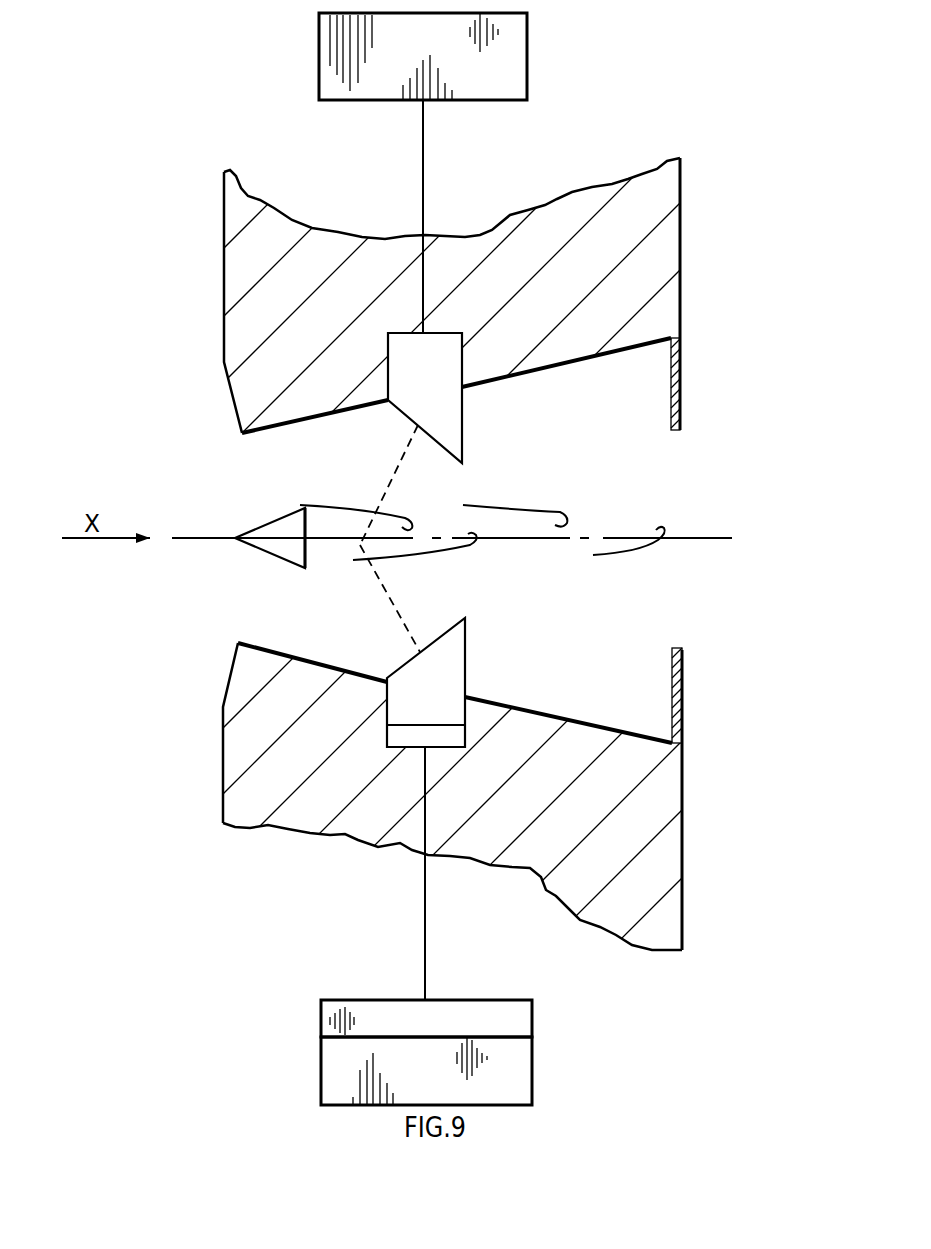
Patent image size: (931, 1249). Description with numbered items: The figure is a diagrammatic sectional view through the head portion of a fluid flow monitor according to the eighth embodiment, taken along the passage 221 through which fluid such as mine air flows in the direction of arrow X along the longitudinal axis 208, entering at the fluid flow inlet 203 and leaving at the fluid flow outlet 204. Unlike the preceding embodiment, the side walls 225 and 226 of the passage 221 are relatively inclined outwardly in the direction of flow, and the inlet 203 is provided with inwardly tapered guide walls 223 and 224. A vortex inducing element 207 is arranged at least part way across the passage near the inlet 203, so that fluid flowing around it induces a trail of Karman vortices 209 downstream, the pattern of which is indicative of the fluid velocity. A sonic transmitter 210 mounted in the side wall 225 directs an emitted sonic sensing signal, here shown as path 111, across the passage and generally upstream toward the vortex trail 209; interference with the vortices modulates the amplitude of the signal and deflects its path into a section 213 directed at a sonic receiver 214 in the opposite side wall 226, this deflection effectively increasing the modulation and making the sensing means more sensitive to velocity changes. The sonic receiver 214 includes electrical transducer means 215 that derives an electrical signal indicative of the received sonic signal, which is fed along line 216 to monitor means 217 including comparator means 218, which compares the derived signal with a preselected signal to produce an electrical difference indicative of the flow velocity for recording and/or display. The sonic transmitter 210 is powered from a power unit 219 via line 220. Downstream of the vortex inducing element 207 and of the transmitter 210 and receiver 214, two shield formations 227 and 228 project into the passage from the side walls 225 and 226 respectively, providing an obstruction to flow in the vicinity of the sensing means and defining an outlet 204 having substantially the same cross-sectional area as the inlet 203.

The optical beam (upper path) 111 is at (398, 464).
The fluid flow inlet 203 is at (225, 480).
The fluid flow outlet 204 is at (675, 492).
The vortex inducing element 207 is at (265, 552).
The longitudinal axis of the passage 208 is at (702, 540).
The Karman vortices 209 is at (330, 563).
The sonic transmitter 210 is at (445, 358).
The section of path 213 is at (398, 627).
The sonic receiver 214 is at (455, 682).
The electrical transducer means 215 is at (455, 733).
The line 216 is at (427, 945).
The monitor means 217 is at (497, 1022).
The comparator means 218 is at (505, 1085).
The power unit 219 is at (510, 65).
The line 220 is at (425, 161).
The passage 221 is at (290, 622).
The guide wall 223 is at (232, 406).
The guide wall 224 is at (223, 707).
The side wall 225 is at (573, 366).
The side wall 226 is at (575, 712).
The shield formation 227 is at (684, 416).
The shield formation 228 is at (685, 668).